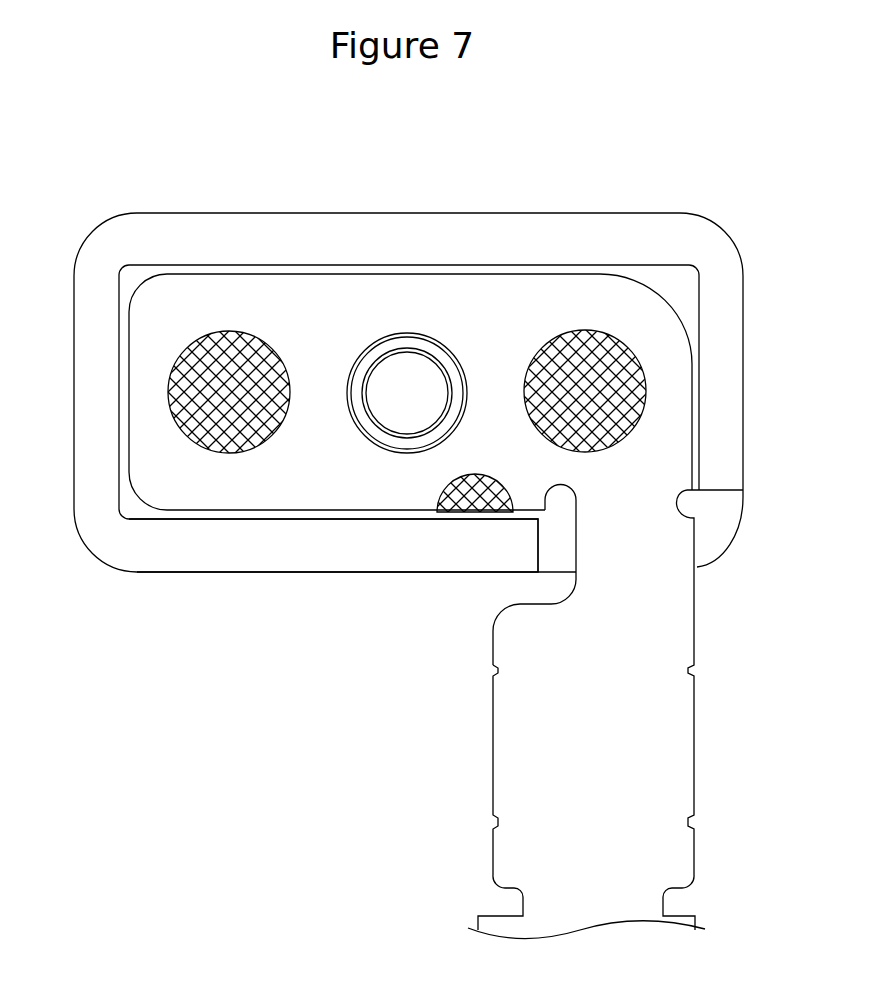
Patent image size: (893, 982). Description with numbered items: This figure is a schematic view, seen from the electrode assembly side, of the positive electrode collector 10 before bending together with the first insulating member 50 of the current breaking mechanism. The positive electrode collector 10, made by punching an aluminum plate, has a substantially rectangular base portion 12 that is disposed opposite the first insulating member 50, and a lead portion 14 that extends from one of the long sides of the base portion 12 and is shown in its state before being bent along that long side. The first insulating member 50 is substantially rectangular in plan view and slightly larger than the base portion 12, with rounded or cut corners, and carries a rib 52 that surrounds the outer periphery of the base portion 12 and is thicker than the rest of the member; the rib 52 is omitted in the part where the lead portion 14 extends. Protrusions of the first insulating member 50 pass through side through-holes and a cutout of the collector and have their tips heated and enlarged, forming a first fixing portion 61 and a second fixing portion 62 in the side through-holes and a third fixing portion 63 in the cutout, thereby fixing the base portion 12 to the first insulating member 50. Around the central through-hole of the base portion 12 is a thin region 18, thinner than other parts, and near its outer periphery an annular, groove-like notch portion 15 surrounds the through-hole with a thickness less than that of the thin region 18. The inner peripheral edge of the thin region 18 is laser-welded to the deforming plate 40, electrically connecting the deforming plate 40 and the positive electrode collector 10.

The positive electrode collector 10 is at (417, 696).
The base portion 12 is at (352, 606).
The lead portion 14 is at (513, 715).
The notch portion 15 is at (340, 463).
The thin region 18 is at (407, 453).
The deforming plate 40 is at (401, 373).
The first insulating member 50 is at (408, 406).
The rib 52 is at (182, 543).
The first fixing portion 61 is at (224, 352).
The second fixing portion 62 is at (596, 352).
The third fixing portion 63 is at (490, 485).